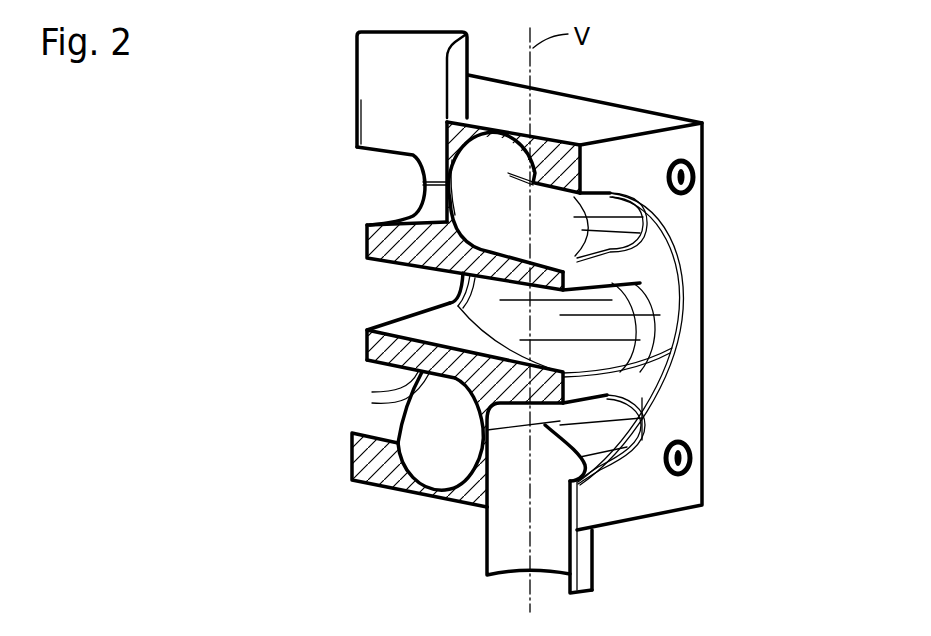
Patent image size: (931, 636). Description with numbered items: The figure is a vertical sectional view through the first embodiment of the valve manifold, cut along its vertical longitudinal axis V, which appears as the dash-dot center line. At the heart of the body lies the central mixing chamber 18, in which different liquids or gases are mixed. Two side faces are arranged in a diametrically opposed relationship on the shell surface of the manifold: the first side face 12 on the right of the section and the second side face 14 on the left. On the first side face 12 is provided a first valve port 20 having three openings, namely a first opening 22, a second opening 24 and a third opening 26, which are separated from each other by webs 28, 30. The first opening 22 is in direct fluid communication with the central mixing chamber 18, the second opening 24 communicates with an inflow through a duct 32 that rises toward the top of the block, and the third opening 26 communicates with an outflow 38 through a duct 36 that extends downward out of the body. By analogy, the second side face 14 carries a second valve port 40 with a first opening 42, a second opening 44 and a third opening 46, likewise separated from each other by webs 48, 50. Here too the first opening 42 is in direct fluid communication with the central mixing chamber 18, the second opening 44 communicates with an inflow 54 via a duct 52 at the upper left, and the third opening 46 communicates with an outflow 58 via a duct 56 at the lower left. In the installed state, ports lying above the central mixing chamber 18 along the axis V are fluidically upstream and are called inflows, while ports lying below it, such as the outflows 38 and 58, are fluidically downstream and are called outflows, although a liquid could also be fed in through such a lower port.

The first side face 12 is at (645, 160).
The second side face 14 is at (312, 247).
The central mixing chamber 18 is at (510, 320).
The first valve port 20 is at (605, 186).
The first opening 22 is at (657, 305).
The second opening 24 is at (617, 217).
The third opening 26 is at (623, 433).
The web 28 is at (587, 278).
The web 30 is at (583, 383).
The duct 32 is at (487, 162).
The duct 36 is at (543, 500).
The outflow 38 is at (547, 582).
The second valve port 40 is at (399, 262).
The first opening 42 is at (368, 289).
The second opening 44 is at (392, 187).
The third opening 46 is at (380, 390).
The web 48 is at (367, 240).
The web 50 is at (375, 341).
The duct 52 is at (390, 128).
The inflow 54 is at (398, 40).
The duct 56 is at (430, 471).
The outflow 58 is at (446, 433).